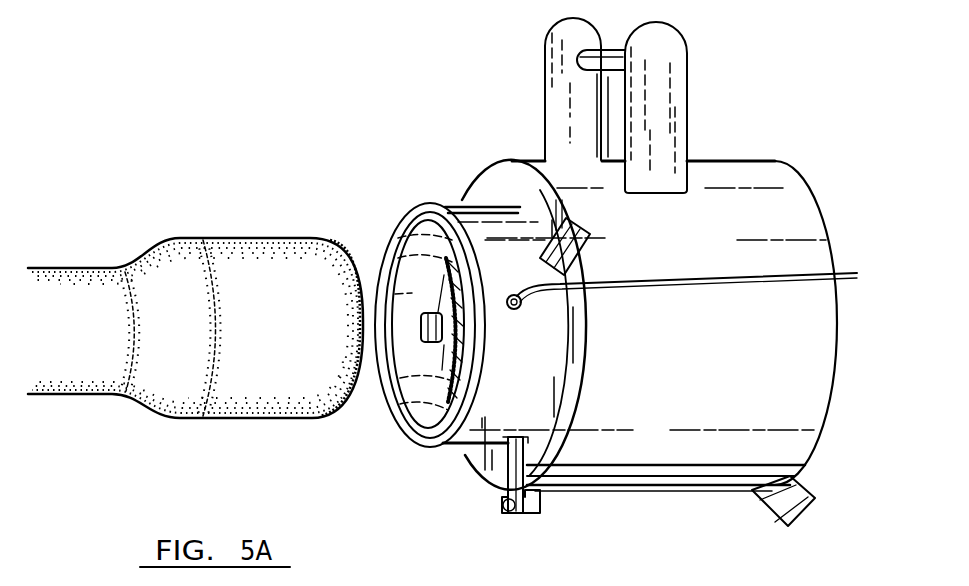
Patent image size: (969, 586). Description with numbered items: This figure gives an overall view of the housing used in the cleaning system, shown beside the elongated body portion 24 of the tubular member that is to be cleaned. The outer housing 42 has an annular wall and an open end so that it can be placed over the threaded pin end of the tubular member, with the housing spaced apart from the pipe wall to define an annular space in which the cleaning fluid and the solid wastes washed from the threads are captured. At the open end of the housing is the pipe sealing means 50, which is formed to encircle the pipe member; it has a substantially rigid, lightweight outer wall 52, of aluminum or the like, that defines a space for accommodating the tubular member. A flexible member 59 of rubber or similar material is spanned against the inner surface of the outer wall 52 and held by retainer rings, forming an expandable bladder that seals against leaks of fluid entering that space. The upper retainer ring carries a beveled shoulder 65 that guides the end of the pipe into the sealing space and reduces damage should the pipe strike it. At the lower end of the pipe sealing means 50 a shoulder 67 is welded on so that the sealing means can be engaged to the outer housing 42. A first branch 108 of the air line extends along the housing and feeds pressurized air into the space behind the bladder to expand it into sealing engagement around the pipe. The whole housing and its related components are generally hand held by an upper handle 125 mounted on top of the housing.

The elongated body portion 24 is at (88, 355).
The outer housing 42 is at (695, 447).
The pipe sealing means 50 is at (437, 195).
The outer wall 52 is at (476, 442).
The flexible member 59 is at (447, 345).
The beveled shoulder 65 is at (392, 393).
The shoulder 67 is at (535, 497).
The first branch 108 is at (792, 275).
The upper handle 125 is at (657, 44).